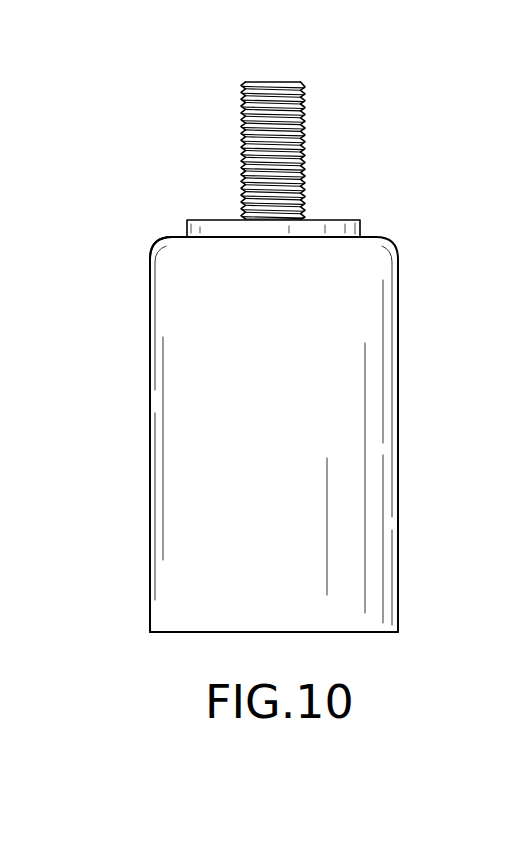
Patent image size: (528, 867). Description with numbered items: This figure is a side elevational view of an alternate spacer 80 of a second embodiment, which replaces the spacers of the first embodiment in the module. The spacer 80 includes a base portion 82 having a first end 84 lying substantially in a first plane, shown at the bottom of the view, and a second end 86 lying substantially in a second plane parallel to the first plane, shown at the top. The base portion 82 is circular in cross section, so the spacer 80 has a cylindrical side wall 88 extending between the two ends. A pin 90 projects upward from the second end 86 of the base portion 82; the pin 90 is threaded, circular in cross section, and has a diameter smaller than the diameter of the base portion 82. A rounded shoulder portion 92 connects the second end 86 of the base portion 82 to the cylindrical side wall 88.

The spacer 80 is at (418, 197).
The base portion 82 is at (398, 392).
The first end 84 is at (352, 632).
The second end 86 is at (205, 220).
The cylindrical side wall 88 is at (308, 536).
The pin 90 is at (306, 122).
The rounded shoulder portion 92 is at (158, 243).